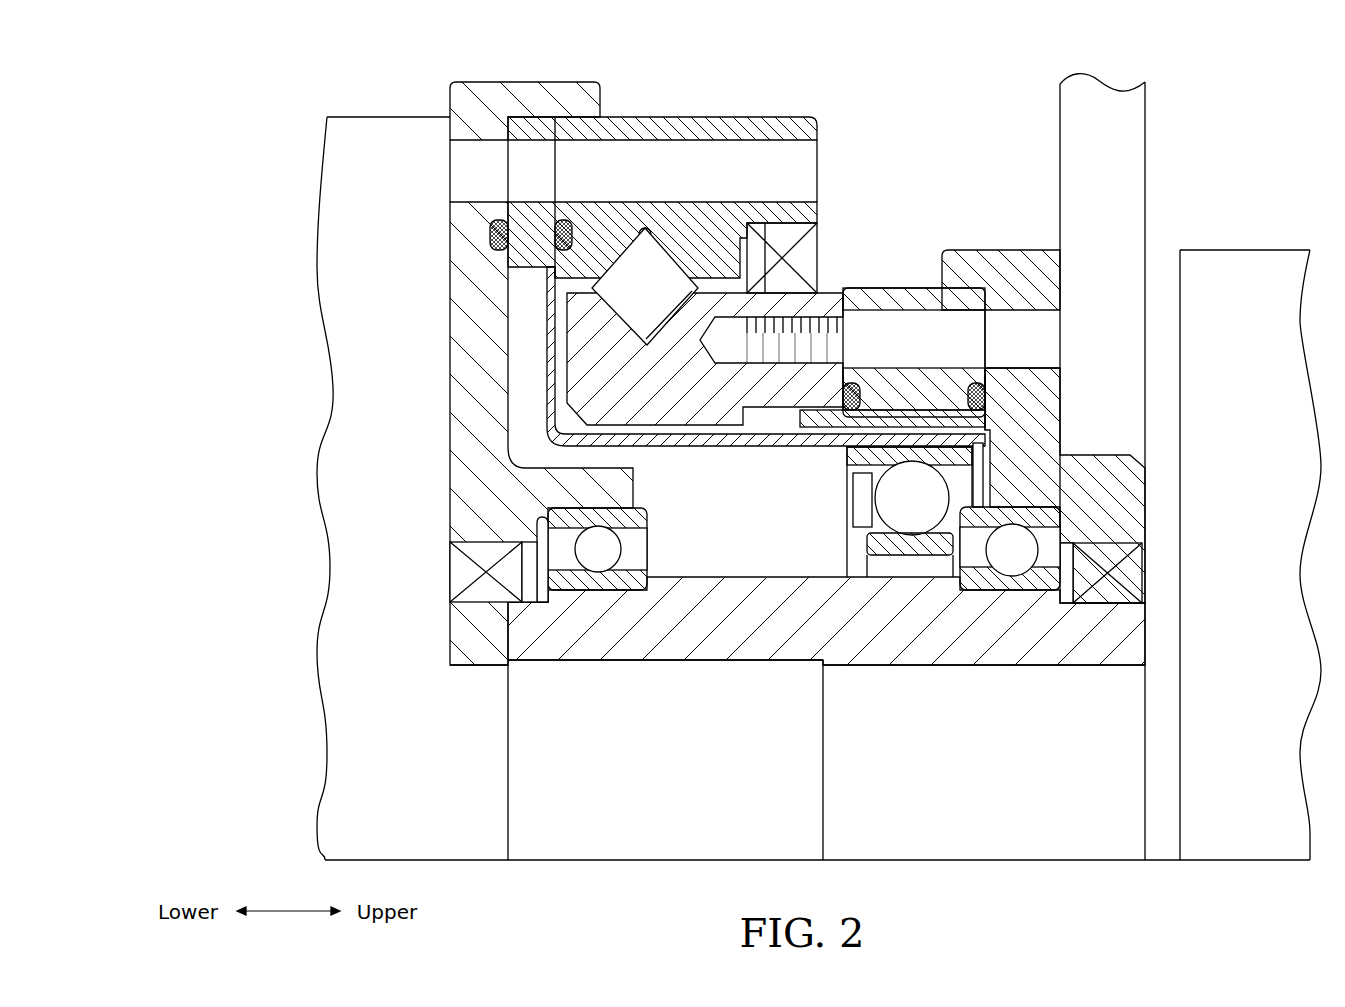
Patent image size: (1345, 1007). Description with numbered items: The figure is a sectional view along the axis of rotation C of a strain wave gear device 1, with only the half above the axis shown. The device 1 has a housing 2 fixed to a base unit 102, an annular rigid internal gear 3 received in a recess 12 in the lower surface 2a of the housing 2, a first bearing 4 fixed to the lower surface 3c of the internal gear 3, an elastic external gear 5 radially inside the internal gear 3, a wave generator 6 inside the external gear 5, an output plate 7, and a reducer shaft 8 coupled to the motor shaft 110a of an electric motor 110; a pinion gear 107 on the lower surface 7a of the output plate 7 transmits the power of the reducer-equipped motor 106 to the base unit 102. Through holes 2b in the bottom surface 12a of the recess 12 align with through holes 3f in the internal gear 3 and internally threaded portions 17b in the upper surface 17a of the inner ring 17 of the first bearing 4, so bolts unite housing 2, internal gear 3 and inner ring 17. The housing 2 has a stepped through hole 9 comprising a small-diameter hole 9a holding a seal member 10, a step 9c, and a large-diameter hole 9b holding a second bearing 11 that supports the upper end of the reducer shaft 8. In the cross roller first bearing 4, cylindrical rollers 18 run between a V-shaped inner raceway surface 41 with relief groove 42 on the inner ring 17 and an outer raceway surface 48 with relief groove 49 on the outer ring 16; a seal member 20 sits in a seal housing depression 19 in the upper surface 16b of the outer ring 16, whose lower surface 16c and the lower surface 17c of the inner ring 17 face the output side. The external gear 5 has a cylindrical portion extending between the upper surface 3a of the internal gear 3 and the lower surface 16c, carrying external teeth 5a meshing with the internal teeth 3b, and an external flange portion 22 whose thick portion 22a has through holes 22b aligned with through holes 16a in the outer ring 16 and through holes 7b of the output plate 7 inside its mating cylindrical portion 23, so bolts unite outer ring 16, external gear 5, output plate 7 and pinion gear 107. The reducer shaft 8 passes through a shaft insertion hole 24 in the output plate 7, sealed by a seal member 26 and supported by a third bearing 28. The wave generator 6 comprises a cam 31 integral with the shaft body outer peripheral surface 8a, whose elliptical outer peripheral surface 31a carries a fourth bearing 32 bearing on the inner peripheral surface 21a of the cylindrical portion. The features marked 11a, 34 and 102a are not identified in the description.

The strain wave gear device 1 is at (977, 230).
The housing 2 is at (1010, 250).
The lower surface of the housing 2a is at (942, 270).
The through holes of the housing 2b is at (1060, 318).
The internal gear 3 is at (900, 288).
The upper surface of the internal gear 3a is at (1040, 308).
The internal teeth 3b is at (830, 450).
The lower surface of the internal gear 3c is at (632, 455).
The through holes of the internal gear 3f is at (993, 372).
The first bearing 4 is at (790, 115).
The external gear 5 is at (565, 508).
The external teeth 5a is at (908, 424).
The wave generator 6 is at (1120, 480).
The output plate 7 is at (450, 385).
The lower surface of the output plate 7a is at (520, 495).
The through holes of the output plate 7b is at (450, 142).
The reducer shaft 8 is at (690, 572).
The shaft body outer peripheral surface 8a is at (740, 600).
The stepped through hole 9 is at (1048, 765).
The small-diameter hole 9a is at (1085, 608).
The large-diameter hole 9b is at (1000, 605).
The step 9c is at (1150, 545).
The seal member 10 is at (1100, 570).
The second bearing 11 is at (990, 592).
The retaining surface 11a is at (1080, 520).
The recess 12 is at (1060, 262).
The bottom surface of the recess 12a is at (1040, 368).
The outer ring 16 is at (680, 117).
The through holes of the outer ring 16a is at (735, 135).
The upper surface of the outer ring 16b is at (818, 150).
The lower surface of the outer ring 16c is at (552, 148).
The inner ring 17 is at (705, 359).
The upper surface of the inner ring 17a is at (843, 300).
The internally threaded portions 17b is at (755, 315).
The lower surface of the inner ring 17c is at (555, 350).
The cylindrical rollers 18 is at (603, 270).
The seal housing depression 19 is at (770, 235).
The seal member 20 is at (817, 240).
The inner peripheral surface of the cylindrical portion 21a is at (682, 664).
The external flange portion 22 is at (547, 395).
The thick portion 22a is at (505, 130).
The through holes of the thick portion 22b is at (555, 152).
The mating cylindrical portion 23 is at (575, 88).
The shaft insertion hole 24 is at (537, 545).
The seal member 26 is at (470, 575).
The third bearing 28 is at (610, 590).
The cam 31 is at (880, 545).
The outer peripheral surface of the cam 31a is at (935, 560).
The fourth bearing 32 is at (853, 500).
The ball 34 is at (905, 580).
The inner raceway surface 41 is at (585, 282).
The relief groove 42 is at (547, 335).
The outer raceway surface 48 is at (648, 230).
The relief groove 49 is at (655, 240).
The base unit 102 is at (1060, 120).
The frame wall surface 102a is at (1150, 470).
The reducer-equipped motor 106 is at (1163, 195).
The pinion gear 107 is at (375, 110).
The electric motor 110 is at (1230, 250).
The motor shaft 110a is at (1175, 598).
The axis of rotation C is at (880, 856).